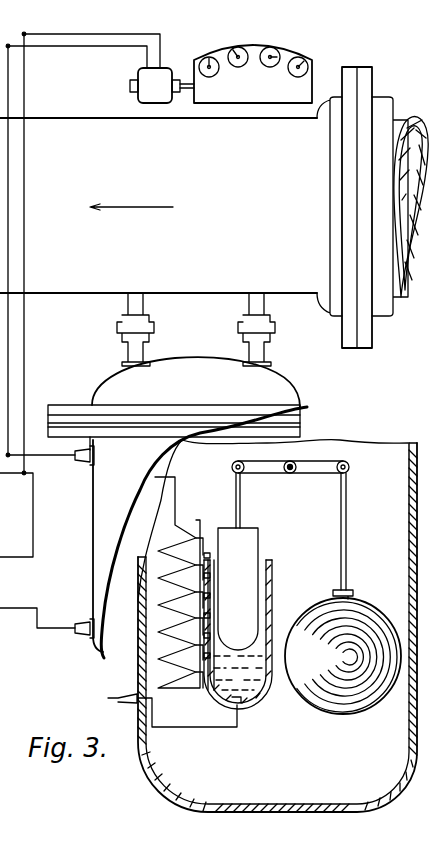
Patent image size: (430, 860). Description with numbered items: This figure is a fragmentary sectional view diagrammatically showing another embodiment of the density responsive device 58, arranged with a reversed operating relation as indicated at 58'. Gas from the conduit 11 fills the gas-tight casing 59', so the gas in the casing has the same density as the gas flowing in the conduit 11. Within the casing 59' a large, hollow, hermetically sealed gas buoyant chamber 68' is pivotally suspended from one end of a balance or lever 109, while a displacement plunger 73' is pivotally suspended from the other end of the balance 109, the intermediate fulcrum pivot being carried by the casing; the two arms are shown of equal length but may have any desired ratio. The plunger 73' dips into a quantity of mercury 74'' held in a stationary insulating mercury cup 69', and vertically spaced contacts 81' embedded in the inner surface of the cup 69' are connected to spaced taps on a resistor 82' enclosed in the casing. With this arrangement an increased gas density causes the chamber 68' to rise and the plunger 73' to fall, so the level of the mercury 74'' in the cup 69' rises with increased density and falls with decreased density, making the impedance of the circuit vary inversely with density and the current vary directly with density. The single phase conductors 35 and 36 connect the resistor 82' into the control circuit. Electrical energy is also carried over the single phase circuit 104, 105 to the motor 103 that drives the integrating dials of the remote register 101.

The conduit 11 is at (243, 230).
The remote register 101 is at (255, 103).
The alternating current motor 103 is at (158, 103).
The single phase circuit conductor 104 is at (62, 47).
The single phase circuit conductor 105 is at (112, 35).
The single phase conductor 35 is at (52, 456).
The single phase conductor 36 is at (33, 521).
The density responsive device 58 is at (222, 475).
The reversed density responsive device 58' is at (385, 486).
The casing 59' is at (262, 627).
The balance or lever 109 is at (270, 471).
The plunger 73' is at (252, 582).
The contacts 81' is at (228, 621).
The resistor 82' is at (151, 582).
The mercury 74'' is at (241, 652).
The mercury cup 69' is at (338, 652).
The gas buoyant chamber 68' is at (347, 678).